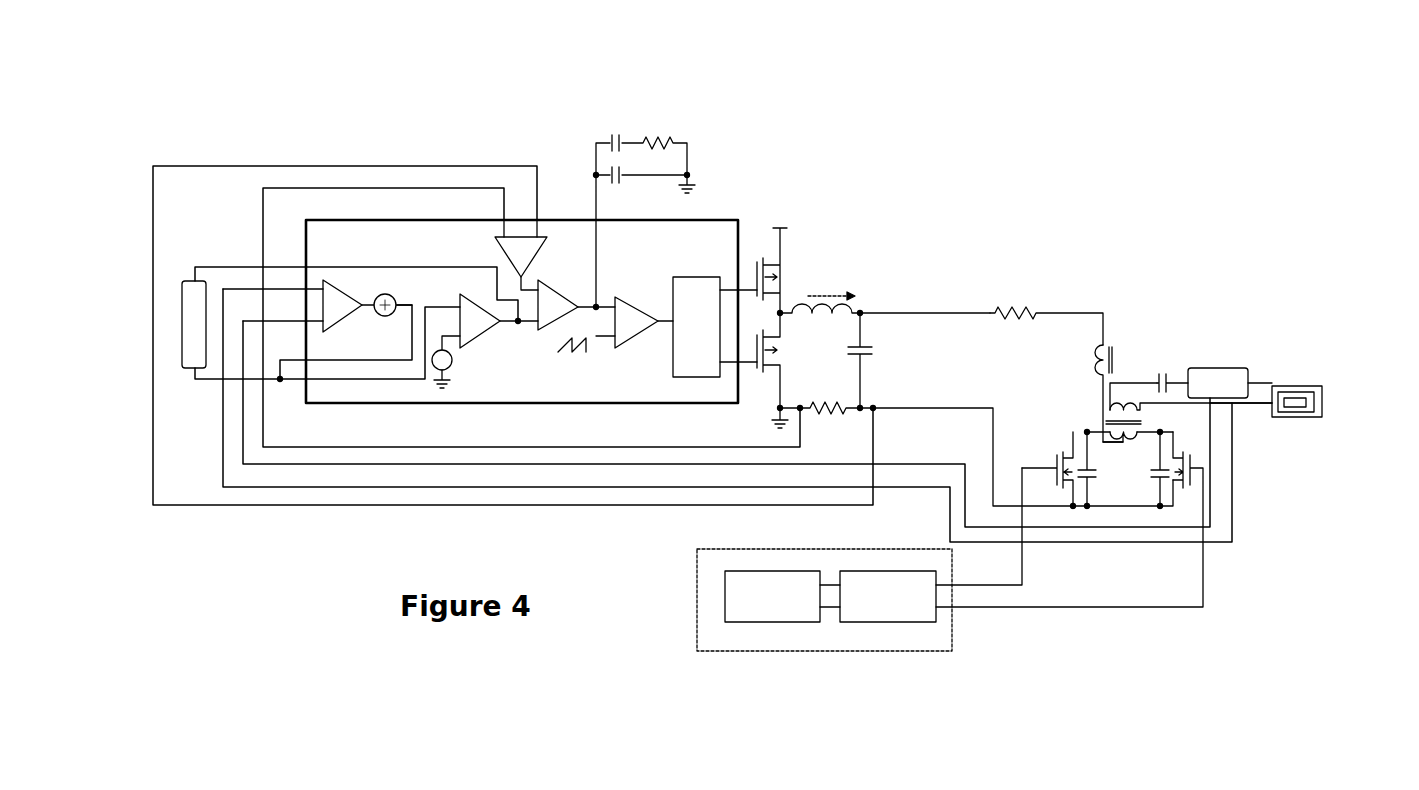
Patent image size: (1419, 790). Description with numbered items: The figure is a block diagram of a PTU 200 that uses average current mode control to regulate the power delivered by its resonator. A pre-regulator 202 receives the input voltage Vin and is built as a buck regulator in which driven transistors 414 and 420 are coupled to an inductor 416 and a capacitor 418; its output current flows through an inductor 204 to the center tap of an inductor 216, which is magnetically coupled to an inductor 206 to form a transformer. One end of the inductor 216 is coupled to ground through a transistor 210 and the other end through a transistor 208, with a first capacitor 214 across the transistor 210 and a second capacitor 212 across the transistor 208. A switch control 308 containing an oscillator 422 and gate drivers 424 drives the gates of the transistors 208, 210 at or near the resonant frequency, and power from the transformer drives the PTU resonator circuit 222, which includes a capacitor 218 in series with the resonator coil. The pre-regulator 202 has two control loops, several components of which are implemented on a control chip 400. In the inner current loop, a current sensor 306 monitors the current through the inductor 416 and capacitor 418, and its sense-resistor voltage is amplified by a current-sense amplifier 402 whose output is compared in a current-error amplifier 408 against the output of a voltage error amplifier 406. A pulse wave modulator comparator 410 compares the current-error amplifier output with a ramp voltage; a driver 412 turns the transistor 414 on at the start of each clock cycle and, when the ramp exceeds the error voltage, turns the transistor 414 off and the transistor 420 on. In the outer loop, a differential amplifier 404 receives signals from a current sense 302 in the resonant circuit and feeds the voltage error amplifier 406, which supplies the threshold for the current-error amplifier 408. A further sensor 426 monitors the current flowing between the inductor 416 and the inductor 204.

The PTU 200 is at (1300, 155).
The pre-regulator 202 is at (260, 125).
The inductor 204 is at (1110, 345).
The inductor 206 is at (1122, 408).
The transistor 208 is at (1069, 509).
The transistor 210 is at (1057, 455).
The second capacitor 212 is at (1157, 478).
The first capacitor 214 is at (1085, 468).
The inductor 216 is at (1123, 442).
The capacitor 218 is at (1165, 372).
The PTU resonator circuit 222 is at (1253, 408).
The current sense 302 is at (1220, 368).
The current sensor 306 is at (838, 408).
The switch control 308 is at (824, 600).
The control chip 400 is at (522, 305).
The current-sense amplifier 402 is at (500, 252).
The differential amplifier 404 is at (337, 292).
The voltage error amplifier 406 is at (483, 318).
The current-error amplifier 408 is at (548, 287).
The pulse wave modulator comparator 410 is at (635, 312).
The driver 412 is at (682, 303).
The transistor 414 is at (785, 265).
The inductor 416 is at (828, 300).
The capacitor 418 is at (868, 354).
The transistor 420 is at (766, 367).
The oscillator 422 is at (740, 600).
The gate drivers 424 is at (908, 607).
The sensor 426 is at (1008, 300).